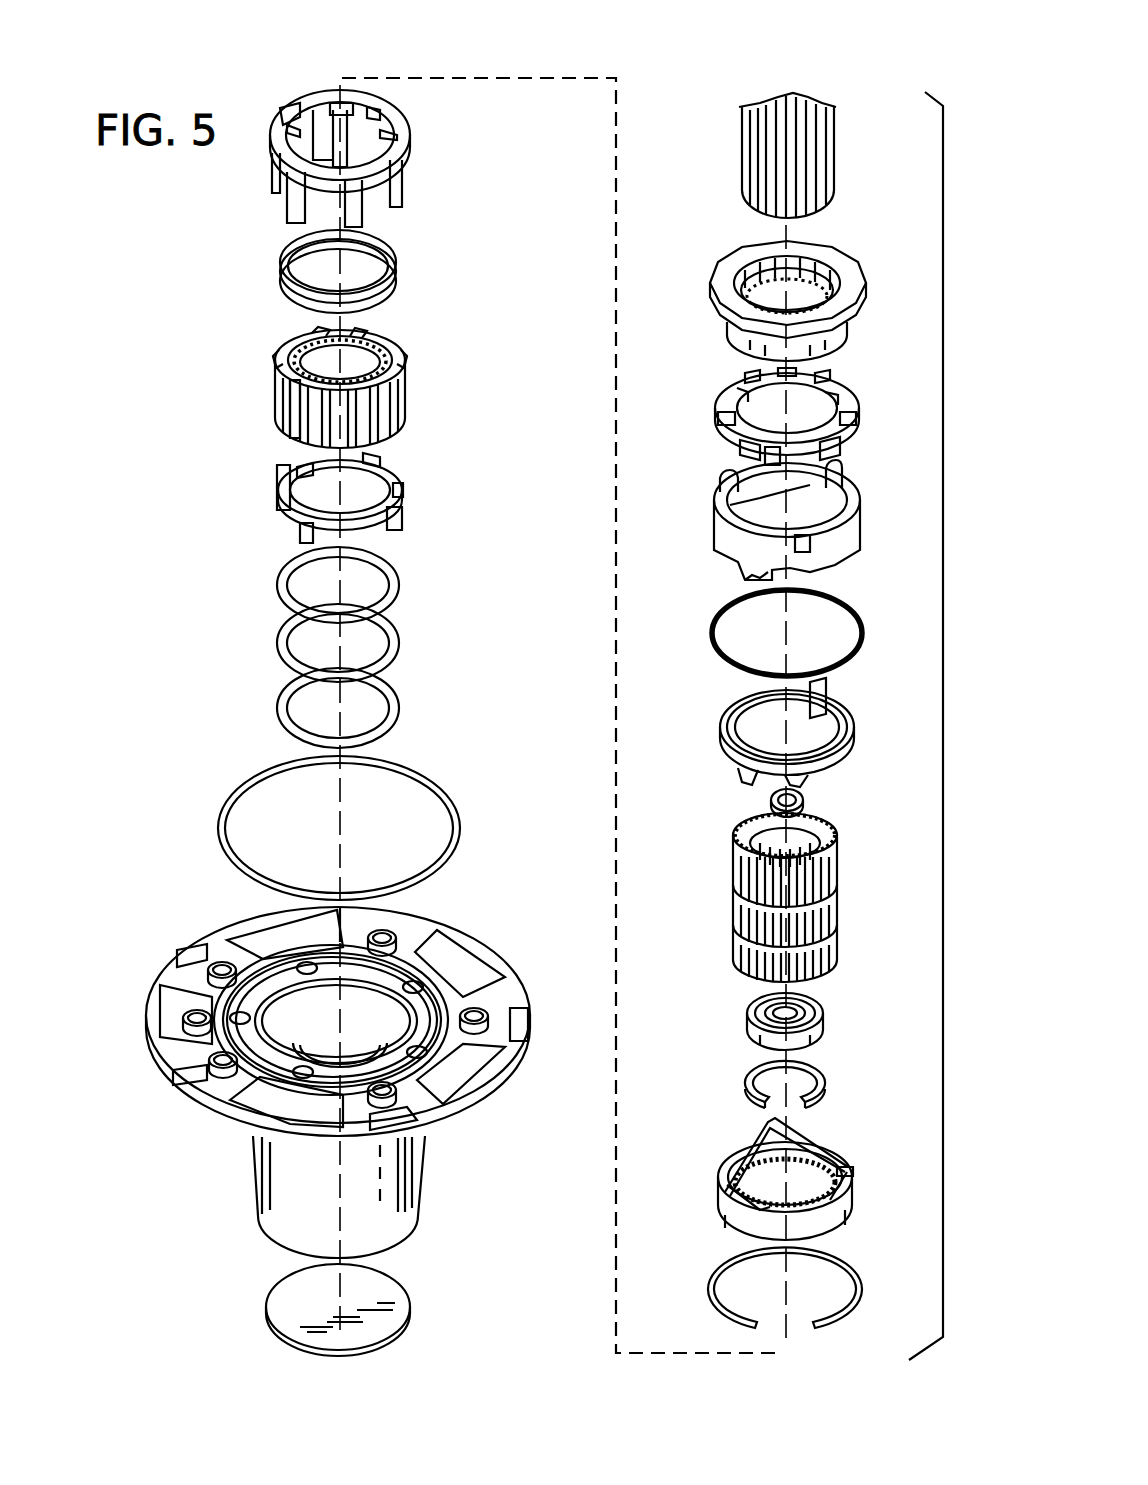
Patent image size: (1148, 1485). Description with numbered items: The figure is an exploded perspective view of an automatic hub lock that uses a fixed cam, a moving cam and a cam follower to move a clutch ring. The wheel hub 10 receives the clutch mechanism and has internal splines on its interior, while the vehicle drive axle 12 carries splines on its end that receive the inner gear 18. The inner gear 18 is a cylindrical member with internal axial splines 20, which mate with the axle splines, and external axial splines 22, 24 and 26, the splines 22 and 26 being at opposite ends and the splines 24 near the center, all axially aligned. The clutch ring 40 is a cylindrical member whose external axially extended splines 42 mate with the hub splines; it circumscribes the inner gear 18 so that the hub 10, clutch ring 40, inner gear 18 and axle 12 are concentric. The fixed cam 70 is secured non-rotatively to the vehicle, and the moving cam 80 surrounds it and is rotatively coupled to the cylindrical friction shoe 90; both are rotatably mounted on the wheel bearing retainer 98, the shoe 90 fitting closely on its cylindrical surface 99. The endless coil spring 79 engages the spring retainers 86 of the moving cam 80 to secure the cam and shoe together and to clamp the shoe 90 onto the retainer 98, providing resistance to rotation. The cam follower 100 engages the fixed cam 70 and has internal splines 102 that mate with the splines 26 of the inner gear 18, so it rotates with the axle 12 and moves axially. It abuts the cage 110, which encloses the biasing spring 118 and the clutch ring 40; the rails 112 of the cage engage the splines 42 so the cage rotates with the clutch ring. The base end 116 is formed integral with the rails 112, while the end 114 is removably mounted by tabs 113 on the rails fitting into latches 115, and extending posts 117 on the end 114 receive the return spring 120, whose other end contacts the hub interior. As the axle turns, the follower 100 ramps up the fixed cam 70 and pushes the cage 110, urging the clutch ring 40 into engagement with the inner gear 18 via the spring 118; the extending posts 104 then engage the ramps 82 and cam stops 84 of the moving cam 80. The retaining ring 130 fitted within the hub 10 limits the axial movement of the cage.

The wheel hub 10 is at (254, 1200).
The vehicle drive axle 12 is at (833, 165).
The inner gear 18 is at (757, 830).
The internal axial splines 20 is at (772, 891).
The external axial splines 22 is at (733, 945).
The external axial splines 24 is at (733, 905).
The external axial splines 26 is at (733, 870).
The clutch ring 40 is at (375, 381).
The external axially extended splines 42 is at (405, 405).
The fixed cam 70 is at (735, 712).
The endless coil spring 79 is at (838, 666).
The moving cam 80 is at (790, 531).
The ramps 82 is at (833, 520).
The cam stops 84 is at (740, 580).
The spring retainers 86 is at (722, 497).
The friction shoe 90 is at (735, 385).
The wheel bearing retainer 98 is at (792, 291).
The cylindrical surface 99 is at (825, 352).
The cam follower 100 is at (804, 1177).
The internal splines 102 is at (820, 1150).
The extending posts 104 is at (850, 1178).
The cage 110 is at (345, 146).
The rails 112 is at (362, 208).
The tabs 113 is at (275, 195).
The end 114 is at (336, 499).
The latches 115 is at (282, 515).
The end 116 is at (300, 118).
The extending posts 117 is at (400, 525).
The biasing spring 118 is at (290, 310).
The return spring 120 is at (400, 640).
The retaining ring 130 is at (843, 1265).